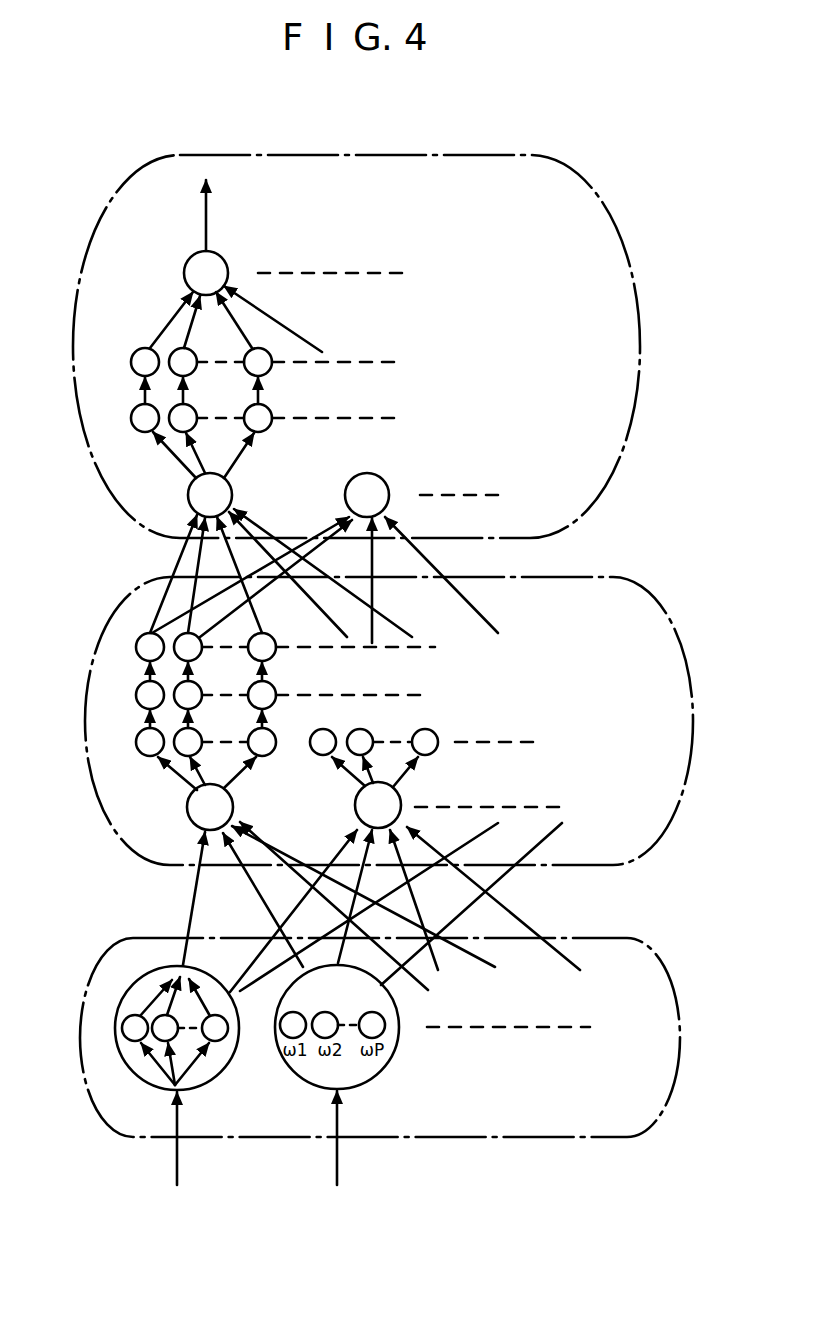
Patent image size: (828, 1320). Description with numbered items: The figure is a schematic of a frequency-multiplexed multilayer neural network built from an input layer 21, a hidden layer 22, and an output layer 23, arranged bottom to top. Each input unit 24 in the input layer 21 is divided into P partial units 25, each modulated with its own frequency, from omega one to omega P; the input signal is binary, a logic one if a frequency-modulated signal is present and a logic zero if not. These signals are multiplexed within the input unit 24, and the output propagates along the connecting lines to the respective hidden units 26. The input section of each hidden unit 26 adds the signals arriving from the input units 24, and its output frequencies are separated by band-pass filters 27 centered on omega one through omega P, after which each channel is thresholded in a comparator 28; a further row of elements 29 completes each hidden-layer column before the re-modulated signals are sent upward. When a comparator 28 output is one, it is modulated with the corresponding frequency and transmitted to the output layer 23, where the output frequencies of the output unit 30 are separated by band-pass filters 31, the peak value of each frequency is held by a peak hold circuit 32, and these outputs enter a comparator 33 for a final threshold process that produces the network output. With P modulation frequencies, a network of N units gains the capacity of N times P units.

The input layer 21 is at (680, 1000).
The hidden layer 22 is at (695, 735).
The output layer 23 is at (641, 372).
The input unit 24 is at (122, 1082).
The partial unit 25 is at (122, 1027).
The hidden unit 26 is at (187, 807).
The band-pass filter 27 is at (136, 745).
The comparator 28 is at (136, 695).
The third weight row of intermediate layer 29 is at (136, 647).
The output unit 30 is at (188, 495).
The band-pass filter 31 is at (136, 411).
The peak hold circuit 32 is at (145, 348).
The comparator 33 is at (218, 248).